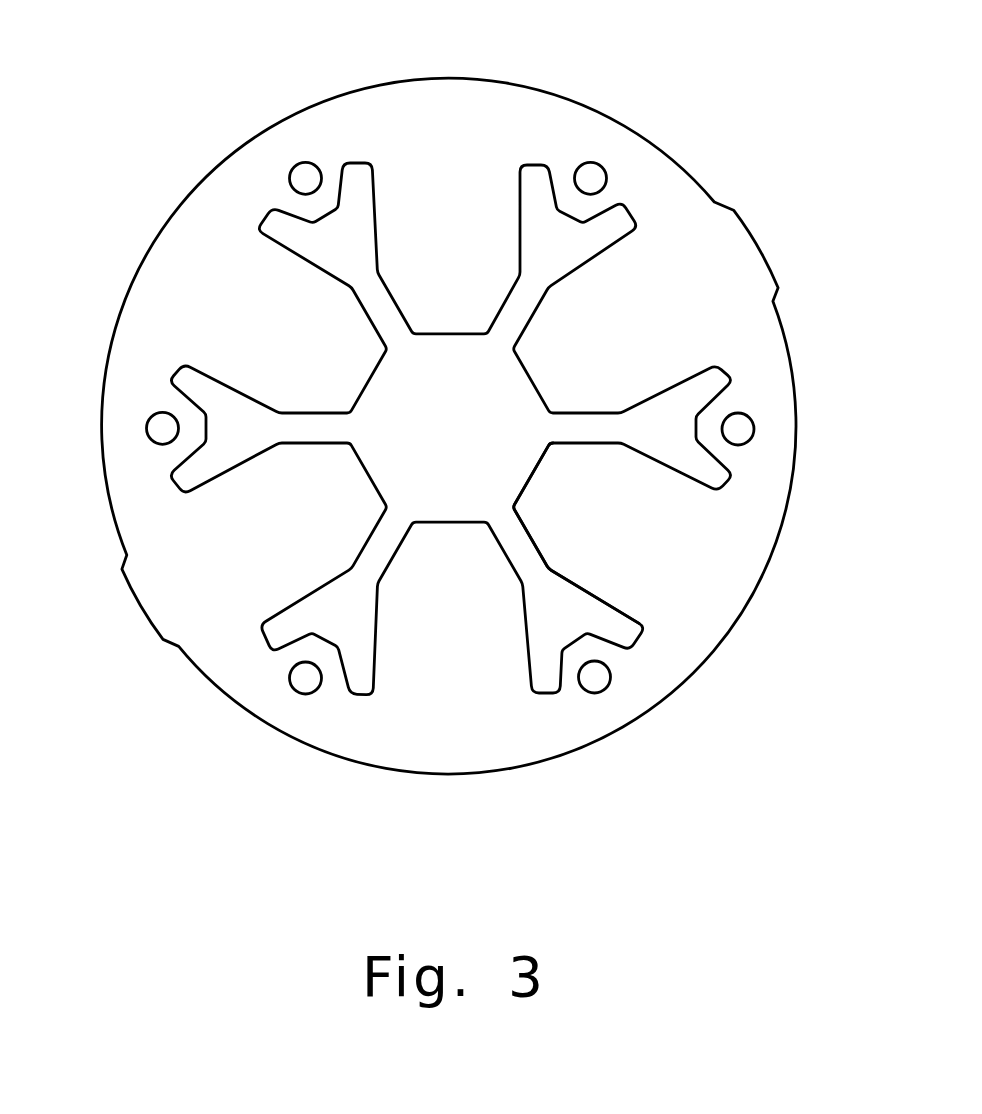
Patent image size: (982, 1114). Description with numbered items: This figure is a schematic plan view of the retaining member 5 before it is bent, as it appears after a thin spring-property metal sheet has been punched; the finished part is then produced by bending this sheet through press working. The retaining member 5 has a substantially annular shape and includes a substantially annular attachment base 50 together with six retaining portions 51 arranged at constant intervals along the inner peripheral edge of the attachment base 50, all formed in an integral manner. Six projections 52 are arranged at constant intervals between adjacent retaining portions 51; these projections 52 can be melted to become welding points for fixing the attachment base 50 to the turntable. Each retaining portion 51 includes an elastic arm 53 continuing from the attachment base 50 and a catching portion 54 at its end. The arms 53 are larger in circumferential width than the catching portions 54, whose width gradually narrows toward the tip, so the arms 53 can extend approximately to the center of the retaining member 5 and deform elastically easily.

The retaining member 5 is at (466, 388).
The attachment base 50 is at (550, 122).
The retaining portion 51 is at (258, 308).
The projection 52 is at (749, 426).
The arm 53 is at (622, 575).
The catching portion 54 is at (343, 485).